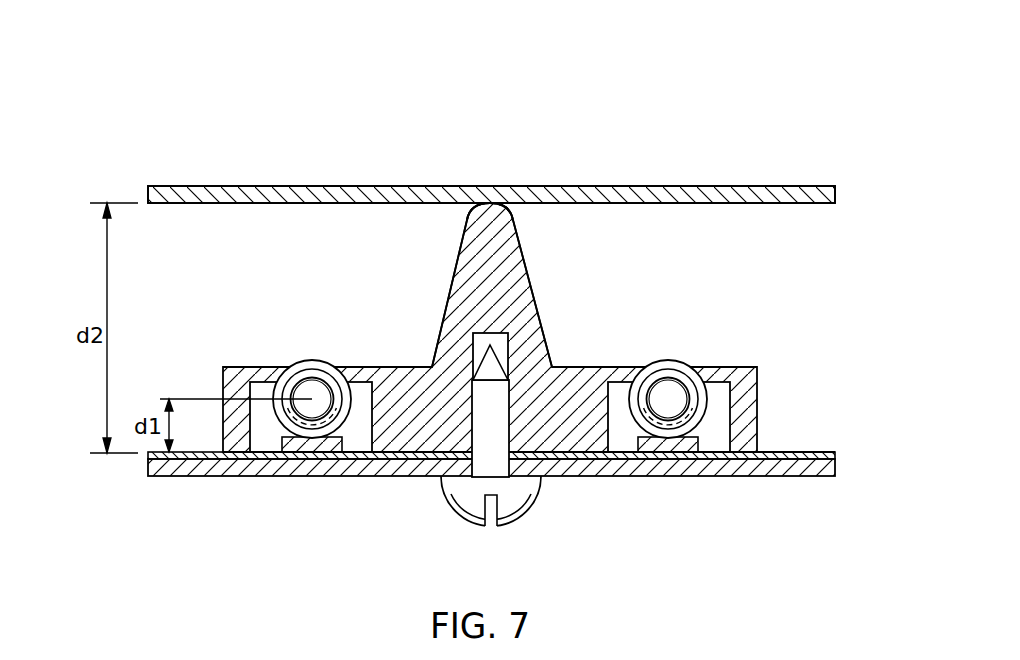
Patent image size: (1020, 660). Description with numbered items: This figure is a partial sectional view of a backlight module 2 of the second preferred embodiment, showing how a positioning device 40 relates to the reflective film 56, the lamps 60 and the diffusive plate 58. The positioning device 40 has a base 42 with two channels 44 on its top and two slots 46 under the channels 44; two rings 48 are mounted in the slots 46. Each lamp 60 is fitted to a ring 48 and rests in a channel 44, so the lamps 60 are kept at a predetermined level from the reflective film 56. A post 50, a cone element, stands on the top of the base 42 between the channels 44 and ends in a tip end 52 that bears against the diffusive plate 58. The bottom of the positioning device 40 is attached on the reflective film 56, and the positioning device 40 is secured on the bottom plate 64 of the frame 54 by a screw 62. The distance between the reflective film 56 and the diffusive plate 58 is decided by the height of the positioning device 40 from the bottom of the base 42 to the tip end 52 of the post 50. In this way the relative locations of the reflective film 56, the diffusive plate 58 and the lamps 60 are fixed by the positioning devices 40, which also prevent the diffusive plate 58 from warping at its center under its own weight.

The backlight module 2 is at (722, 132).
The positioning device 40 is at (772, 355).
The base 42 is at (565, 435).
The channel 44 is at (338, 366).
The slot 46 is at (355, 438).
The ring 48 is at (298, 366).
The post 50 is at (517, 285).
The tip end 52 is at (508, 205).
The frame 54 is at (778, 492).
The reflective film 56 is at (812, 452).
The diffusive plate 58 is at (777, 190).
The lamp 60 is at (298, 423).
The screw 62 is at (467, 495).
The bottom plate 64 is at (762, 470).